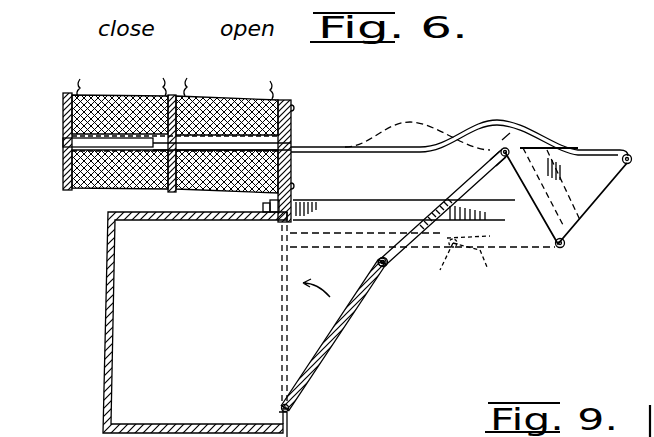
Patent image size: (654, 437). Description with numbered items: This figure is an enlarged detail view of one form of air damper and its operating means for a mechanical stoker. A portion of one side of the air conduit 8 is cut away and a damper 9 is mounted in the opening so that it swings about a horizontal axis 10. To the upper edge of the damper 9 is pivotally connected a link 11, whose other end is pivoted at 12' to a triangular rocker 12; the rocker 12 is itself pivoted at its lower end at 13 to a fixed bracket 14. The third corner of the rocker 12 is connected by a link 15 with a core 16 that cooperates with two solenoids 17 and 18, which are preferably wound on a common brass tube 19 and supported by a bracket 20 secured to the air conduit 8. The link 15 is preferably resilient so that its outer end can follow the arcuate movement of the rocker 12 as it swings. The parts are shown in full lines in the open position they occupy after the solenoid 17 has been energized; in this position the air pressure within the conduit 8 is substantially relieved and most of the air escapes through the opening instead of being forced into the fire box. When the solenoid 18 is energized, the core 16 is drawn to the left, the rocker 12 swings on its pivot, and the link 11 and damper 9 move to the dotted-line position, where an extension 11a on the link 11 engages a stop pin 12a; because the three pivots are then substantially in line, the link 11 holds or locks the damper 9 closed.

The air conduit 8 is at (115, 300).
The damper 9 is at (340, 319).
The horizontal axis 10 is at (290, 410).
The link 11 is at (452, 196).
The extension 11a is at (520, 124).
The triangular rocker 12 is at (579, 196).
The pivot 12' is at (452, 213).
The stop pin 12a is at (460, 276).
The pivot 13 is at (560, 250).
The fixed bracket 14 is at (383, 207).
The link 15 is at (508, 123).
The core 16 is at (296, 134).
The solenoid 17 is at (239, 118).
The solenoid 18 is at (128, 110).
The brass tube 19 is at (62, 144).
The bracket 20 is at (291, 172).